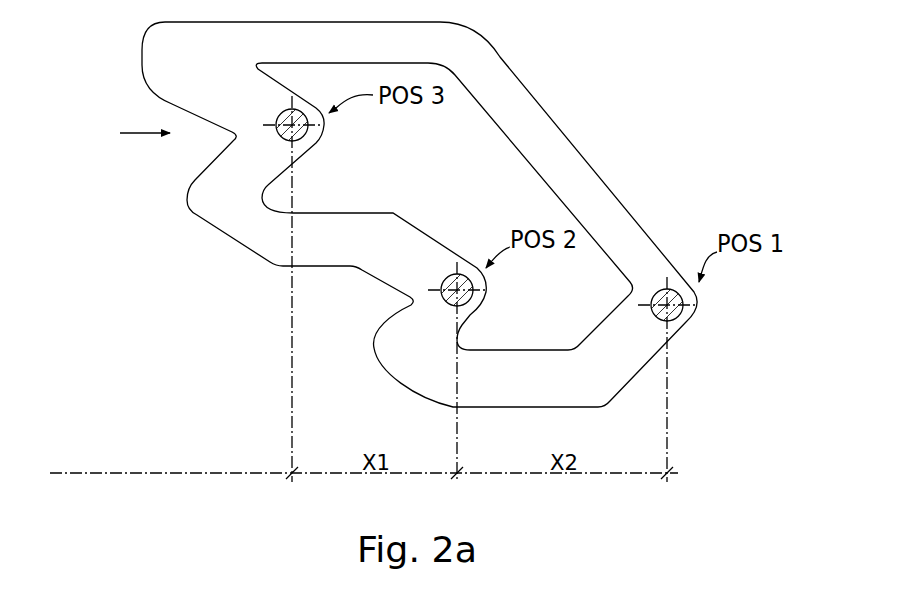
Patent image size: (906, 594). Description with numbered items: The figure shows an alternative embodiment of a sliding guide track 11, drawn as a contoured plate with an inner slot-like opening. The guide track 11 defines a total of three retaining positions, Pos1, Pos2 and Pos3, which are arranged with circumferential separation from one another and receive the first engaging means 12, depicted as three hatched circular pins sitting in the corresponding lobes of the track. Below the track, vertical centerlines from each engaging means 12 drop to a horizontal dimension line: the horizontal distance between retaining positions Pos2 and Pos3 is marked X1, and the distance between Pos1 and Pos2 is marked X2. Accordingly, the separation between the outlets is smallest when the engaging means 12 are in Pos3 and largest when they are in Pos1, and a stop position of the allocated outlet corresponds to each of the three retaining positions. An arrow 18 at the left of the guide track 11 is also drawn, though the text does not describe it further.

The sliding guide track 11 is at (568, 163).
The first engaging means 12 is at (310, 133).
The insertion direction arrow 18 is at (145, 135).